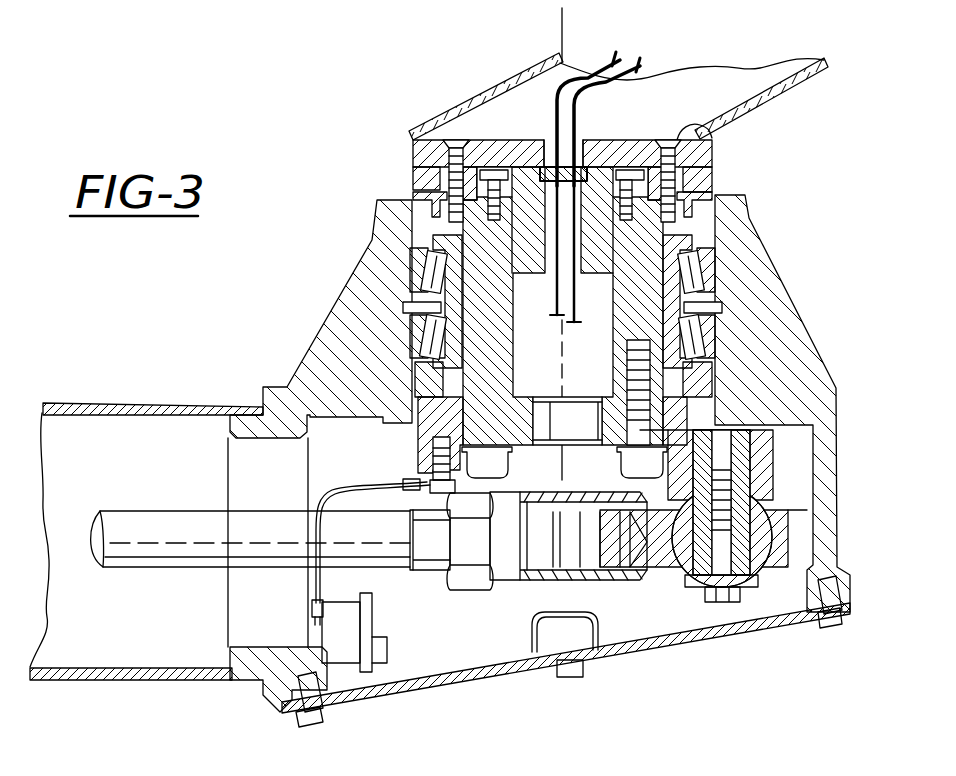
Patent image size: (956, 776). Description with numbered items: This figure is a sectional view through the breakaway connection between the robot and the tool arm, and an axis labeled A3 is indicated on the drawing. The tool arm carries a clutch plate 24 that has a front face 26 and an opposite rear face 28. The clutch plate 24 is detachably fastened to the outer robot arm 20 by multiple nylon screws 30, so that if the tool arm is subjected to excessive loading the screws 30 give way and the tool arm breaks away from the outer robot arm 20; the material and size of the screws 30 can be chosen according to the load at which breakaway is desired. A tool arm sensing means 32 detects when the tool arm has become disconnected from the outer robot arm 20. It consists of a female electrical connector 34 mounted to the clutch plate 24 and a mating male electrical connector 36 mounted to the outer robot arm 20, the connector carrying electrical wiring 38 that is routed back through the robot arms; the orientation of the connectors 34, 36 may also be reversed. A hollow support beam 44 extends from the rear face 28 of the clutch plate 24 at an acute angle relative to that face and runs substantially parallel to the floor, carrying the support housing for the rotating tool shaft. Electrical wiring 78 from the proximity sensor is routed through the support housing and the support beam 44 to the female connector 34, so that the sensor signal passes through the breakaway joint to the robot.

The outer robot arm 20 is at (800, 315).
The clutch plate 24 is at (713, 143).
The front face 26 is at (413, 182).
The rear face 28 is at (465, 112).
The nylon screws 30 is at (722, 122).
The tool arm sensing means 32 is at (535, 136).
The female electrical connector 34 is at (567, 134).
The male electrical connector 36 is at (548, 197).
The electrical wiring 38 is at (557, 277).
The hollow support beam 44 is at (473, 107).
The electrical wiring 78 is at (630, 85).
The axis A3 is at (538, 244).